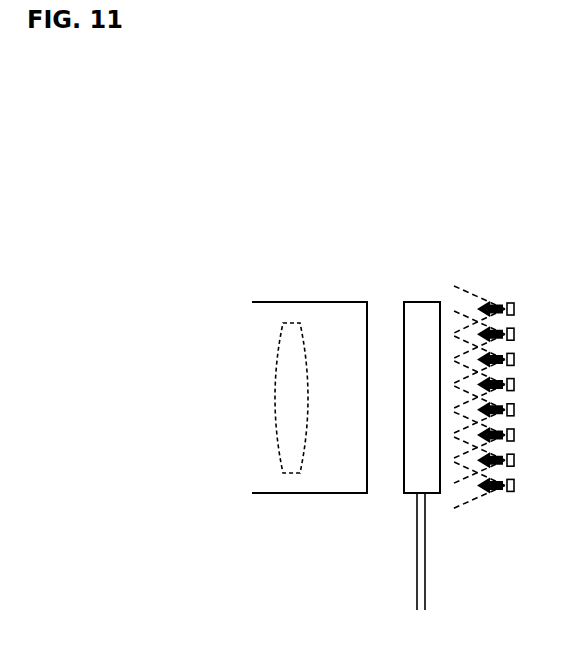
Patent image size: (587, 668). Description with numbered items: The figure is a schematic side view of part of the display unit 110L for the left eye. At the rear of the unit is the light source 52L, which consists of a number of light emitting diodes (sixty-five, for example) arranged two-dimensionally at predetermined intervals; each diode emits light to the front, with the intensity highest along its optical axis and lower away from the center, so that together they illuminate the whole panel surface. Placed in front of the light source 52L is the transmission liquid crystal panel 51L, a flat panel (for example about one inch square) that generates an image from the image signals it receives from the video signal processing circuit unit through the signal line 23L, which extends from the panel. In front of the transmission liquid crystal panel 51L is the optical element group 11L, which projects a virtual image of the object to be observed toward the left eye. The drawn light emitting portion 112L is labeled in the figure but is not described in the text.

The display unit for the left eye 110L is at (353, 141).
The left light emitting array 112L is at (494, 232).
The optical element group 11L is at (306, 302).
The transmission liquid crystal panel 51L is at (424, 302).
The signal line 23L is at (417, 560).
The light source 52L is at (510, 493).